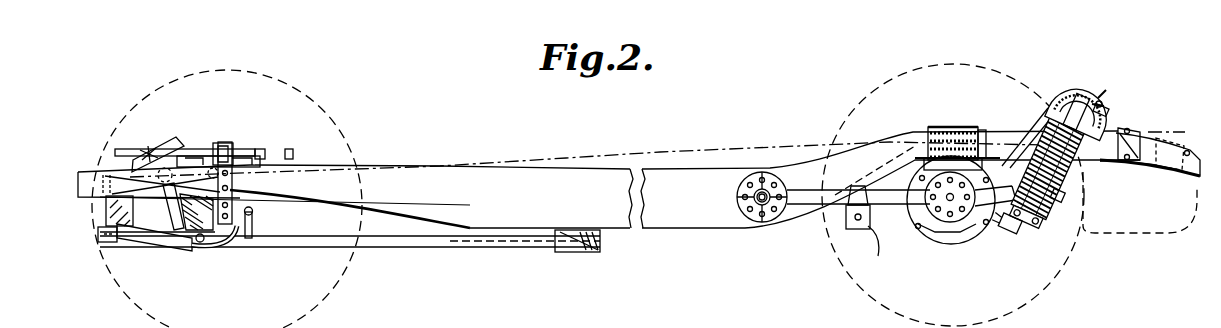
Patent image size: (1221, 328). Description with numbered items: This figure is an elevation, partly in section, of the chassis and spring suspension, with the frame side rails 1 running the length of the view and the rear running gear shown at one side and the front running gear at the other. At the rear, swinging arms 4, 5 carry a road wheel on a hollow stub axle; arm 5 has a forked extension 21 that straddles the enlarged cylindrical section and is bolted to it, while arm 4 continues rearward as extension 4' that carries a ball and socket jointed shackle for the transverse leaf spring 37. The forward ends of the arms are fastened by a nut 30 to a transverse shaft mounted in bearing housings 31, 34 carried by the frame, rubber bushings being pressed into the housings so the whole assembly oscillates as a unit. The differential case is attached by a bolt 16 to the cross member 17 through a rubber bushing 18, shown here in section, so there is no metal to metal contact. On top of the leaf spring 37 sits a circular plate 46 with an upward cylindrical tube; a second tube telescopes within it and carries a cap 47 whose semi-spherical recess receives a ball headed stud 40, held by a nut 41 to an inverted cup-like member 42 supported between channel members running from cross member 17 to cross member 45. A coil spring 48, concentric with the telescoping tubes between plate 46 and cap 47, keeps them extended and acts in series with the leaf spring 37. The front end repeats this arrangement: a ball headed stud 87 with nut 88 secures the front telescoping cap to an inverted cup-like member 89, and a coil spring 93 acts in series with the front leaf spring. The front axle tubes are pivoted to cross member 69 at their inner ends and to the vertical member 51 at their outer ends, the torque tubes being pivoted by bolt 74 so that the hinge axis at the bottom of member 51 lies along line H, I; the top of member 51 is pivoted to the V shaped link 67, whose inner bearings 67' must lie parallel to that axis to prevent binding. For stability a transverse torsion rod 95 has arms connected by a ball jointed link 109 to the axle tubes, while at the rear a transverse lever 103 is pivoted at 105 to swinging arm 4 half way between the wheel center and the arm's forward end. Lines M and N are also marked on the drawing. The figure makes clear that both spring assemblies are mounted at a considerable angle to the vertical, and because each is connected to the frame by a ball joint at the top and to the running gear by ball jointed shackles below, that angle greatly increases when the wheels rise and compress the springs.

The side rail 1 is at (658, 188).
The swinging arm 4 is at (858, 222).
The extension of swinging arm 4' is at (995, 220).
The swinging arm 5 is at (912, 210).
The bolt 16 is at (986, 140).
The cross member 17 is at (940, 127).
The rubber bushing 18 is at (958, 128).
The forked extension 21 is at (964, 169).
The nut 30 is at (768, 190).
The bearing housing 31 is at (1040, 232).
The bearing housing 34 is at (757, 205).
The leaf spring 37 is at (1020, 246).
The ball headed stud 40 is at (1106, 100).
The nut 41 is at (1108, 110).
The inverted cup-like member 42 is at (1035, 125).
The cross member 45 is at (1142, 140).
The circular plate 46 is at (1046, 222).
The cap 47 is at (1052, 110).
The coil spring 48 is at (1086, 181).
The vertical member 51 is at (252, 200).
The V shaped link 67 is at (196, 142).
The pivotal connection of link 67' is at (305, 138).
The cross member 69 is at (106, 210).
The bolt 74 is at (612, 249).
The ball headed stud 87 is at (148, 150).
The nut 88 is at (163, 148).
The inverted cup-like member 89 is at (216, 143).
The coil spring 93 is at (168, 212).
The torsion rod 95 is at (236, 176).
The transverse lever 103 is at (878, 256).
The pivotal connection 105 is at (856, 229).
The link 109 is at (150, 180).
The hinge axis point H is at (98, 231).
The hinge axis point I is at (603, 244).
The motor axis M is at (130, 178).
The housing axis N is at (1195, 133).